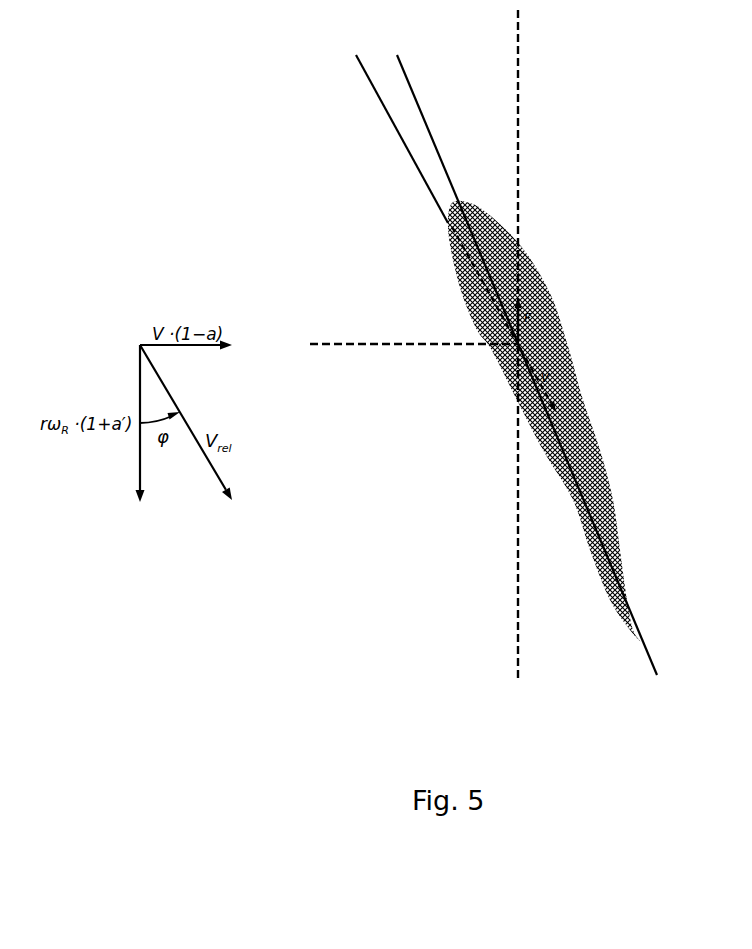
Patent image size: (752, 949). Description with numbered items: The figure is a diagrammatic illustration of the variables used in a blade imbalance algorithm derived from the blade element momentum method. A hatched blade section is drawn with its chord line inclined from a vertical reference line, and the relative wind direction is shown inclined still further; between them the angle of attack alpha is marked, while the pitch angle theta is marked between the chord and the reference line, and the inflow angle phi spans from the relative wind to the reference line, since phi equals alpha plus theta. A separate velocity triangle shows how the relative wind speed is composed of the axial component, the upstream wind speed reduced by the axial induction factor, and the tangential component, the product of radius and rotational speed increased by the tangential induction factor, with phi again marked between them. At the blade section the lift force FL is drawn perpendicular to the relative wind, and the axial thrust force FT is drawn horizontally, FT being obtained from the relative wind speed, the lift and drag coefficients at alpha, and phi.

The inflow angle phi is at (508, 40).
The pitch angle theta is at (507, 80).
The angle of attack alpha is at (410, 109).
The lift force FL is at (518, 344).
The axial thrust force FT is at (518, 344).